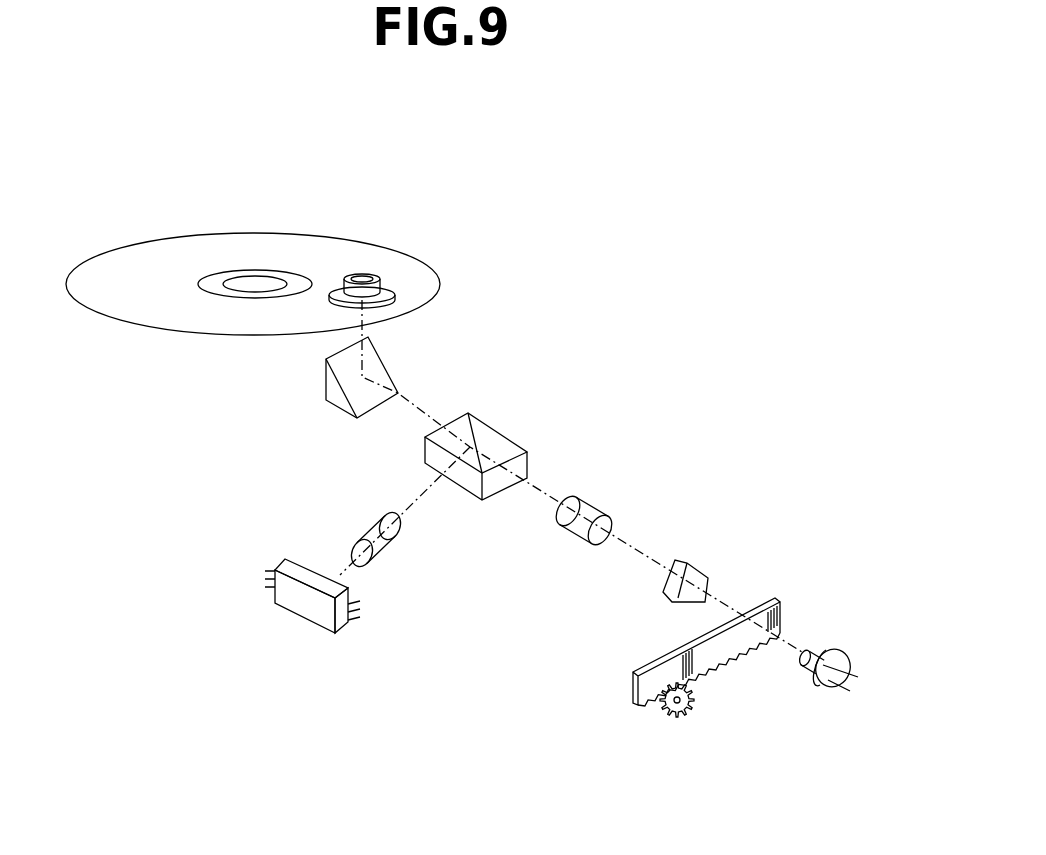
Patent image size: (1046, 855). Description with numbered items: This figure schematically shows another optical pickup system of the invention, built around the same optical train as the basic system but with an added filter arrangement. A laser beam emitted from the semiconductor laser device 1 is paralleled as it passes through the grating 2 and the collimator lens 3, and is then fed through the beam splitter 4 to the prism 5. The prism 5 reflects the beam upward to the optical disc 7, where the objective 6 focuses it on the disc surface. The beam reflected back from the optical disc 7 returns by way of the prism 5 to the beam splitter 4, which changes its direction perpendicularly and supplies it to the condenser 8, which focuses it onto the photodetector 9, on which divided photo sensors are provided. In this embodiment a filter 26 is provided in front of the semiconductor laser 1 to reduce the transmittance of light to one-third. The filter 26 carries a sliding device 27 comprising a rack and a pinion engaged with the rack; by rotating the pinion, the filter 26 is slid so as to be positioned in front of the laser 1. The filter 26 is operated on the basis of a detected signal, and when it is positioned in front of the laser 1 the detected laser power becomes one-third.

The semiconductor laser device 1 is at (840, 652).
The grating 2 is at (695, 568).
The collimator lens 3 is at (583, 508).
The beam splitter 4 is at (503, 448).
The prism 5 is at (373, 363).
The objective 6 is at (382, 282).
The optical disc 7 is at (140, 313).
The condenser 8 is at (378, 549).
The photodetector 9 is at (290, 570).
The filter 26 is at (697, 640).
The sliding device 27 is at (684, 724).